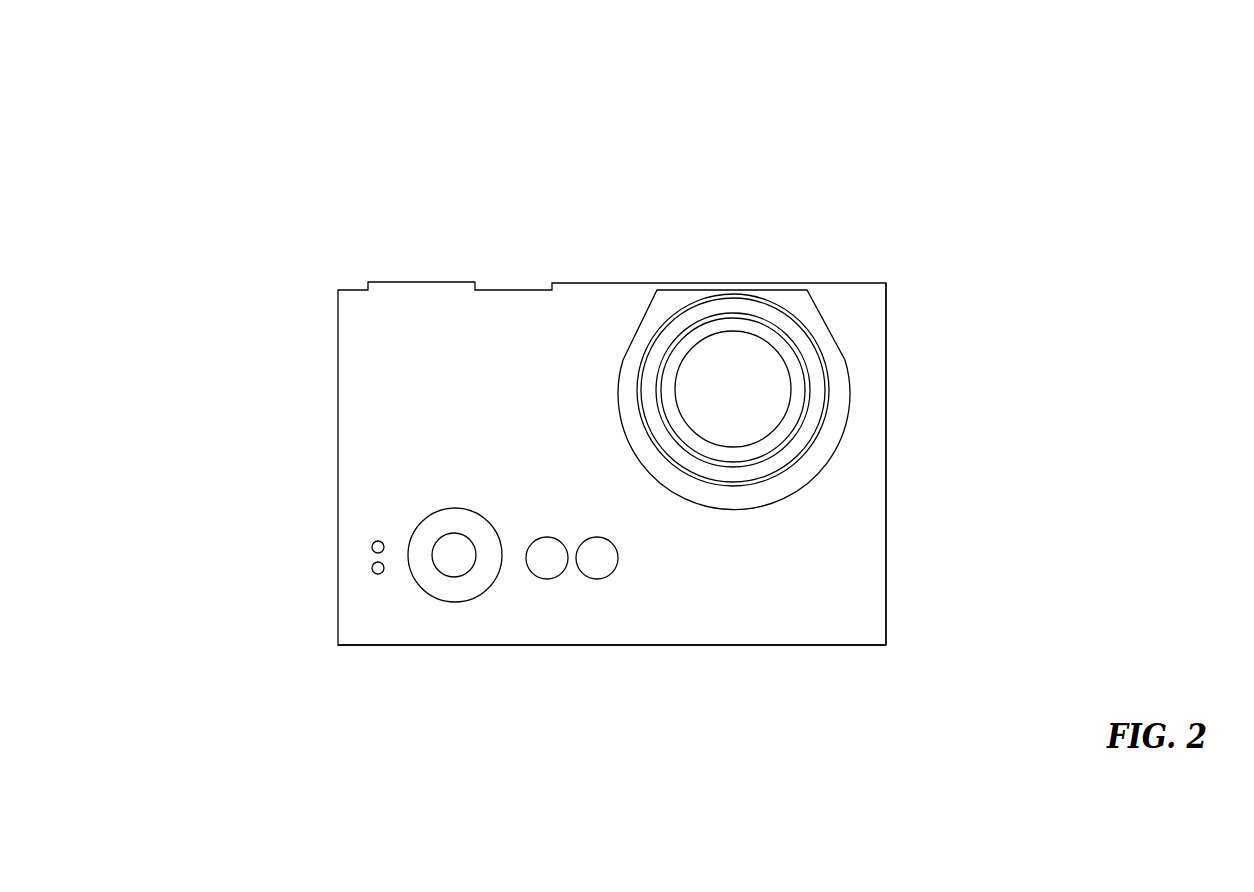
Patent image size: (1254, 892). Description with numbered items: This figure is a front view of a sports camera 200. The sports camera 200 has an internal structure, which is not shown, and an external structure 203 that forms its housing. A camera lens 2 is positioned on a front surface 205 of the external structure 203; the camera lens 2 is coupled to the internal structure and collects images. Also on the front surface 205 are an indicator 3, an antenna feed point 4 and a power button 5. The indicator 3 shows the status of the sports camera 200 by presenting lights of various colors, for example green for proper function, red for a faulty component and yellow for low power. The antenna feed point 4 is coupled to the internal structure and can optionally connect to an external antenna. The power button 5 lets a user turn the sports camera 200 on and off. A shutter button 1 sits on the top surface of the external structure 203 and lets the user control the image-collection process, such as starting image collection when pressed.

The shutter button 1 is at (367, 280).
The camera lens 2 is at (735, 388).
The indicator 3 is at (545, 558).
The antenna feed point 4 is at (373, 542).
The power button 5 is at (455, 555).
The sports camera 200 is at (620, 347).
The external structure 203 is at (890, 500).
The front surface 205 is at (840, 627).